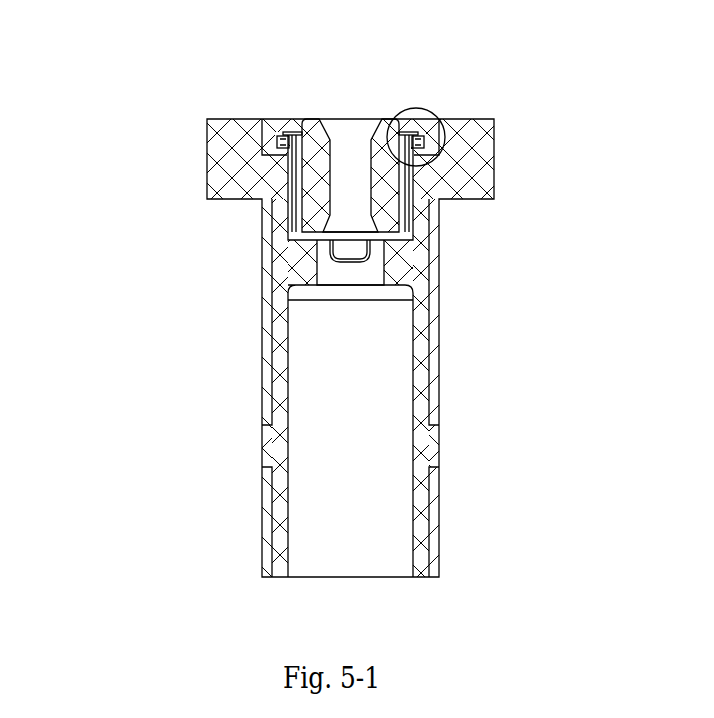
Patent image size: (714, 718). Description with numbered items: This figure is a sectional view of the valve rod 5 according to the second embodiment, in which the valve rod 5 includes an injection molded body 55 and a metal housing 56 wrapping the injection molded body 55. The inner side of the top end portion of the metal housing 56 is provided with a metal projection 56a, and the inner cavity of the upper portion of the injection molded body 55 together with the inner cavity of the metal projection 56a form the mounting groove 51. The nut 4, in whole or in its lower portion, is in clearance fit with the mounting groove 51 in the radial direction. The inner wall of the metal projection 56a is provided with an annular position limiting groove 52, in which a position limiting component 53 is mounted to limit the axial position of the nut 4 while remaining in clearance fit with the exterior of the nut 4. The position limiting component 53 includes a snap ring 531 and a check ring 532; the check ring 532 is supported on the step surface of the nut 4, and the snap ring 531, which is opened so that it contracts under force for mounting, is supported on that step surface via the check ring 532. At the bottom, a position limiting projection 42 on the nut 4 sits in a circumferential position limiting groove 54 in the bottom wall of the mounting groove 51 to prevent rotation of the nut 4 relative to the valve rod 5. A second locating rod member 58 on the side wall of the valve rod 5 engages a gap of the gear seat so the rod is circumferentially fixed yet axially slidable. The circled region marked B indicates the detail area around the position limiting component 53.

The valve rod 5 is at (243, 247).
The nut 4 is at (318, 188).
The position limiting projection 42 is at (580, 268).
The mounting groove 51 is at (580, 203).
The annular position limiting groove 52 is at (580, 156).
The position limiting component 53 is at (117, 97).
The snap ring 531 is at (284, 134).
The check ring 532 is at (282, 145).
The circumferential position limiting groove 54 is at (580, 317).
The injection molded body 55 is at (283, 407).
The metal housing 56 is at (267, 322).
The metal projection 56a is at (605, 105).
The second locating rod member 58 is at (297, 183).
The detail region B is at (580, 65).